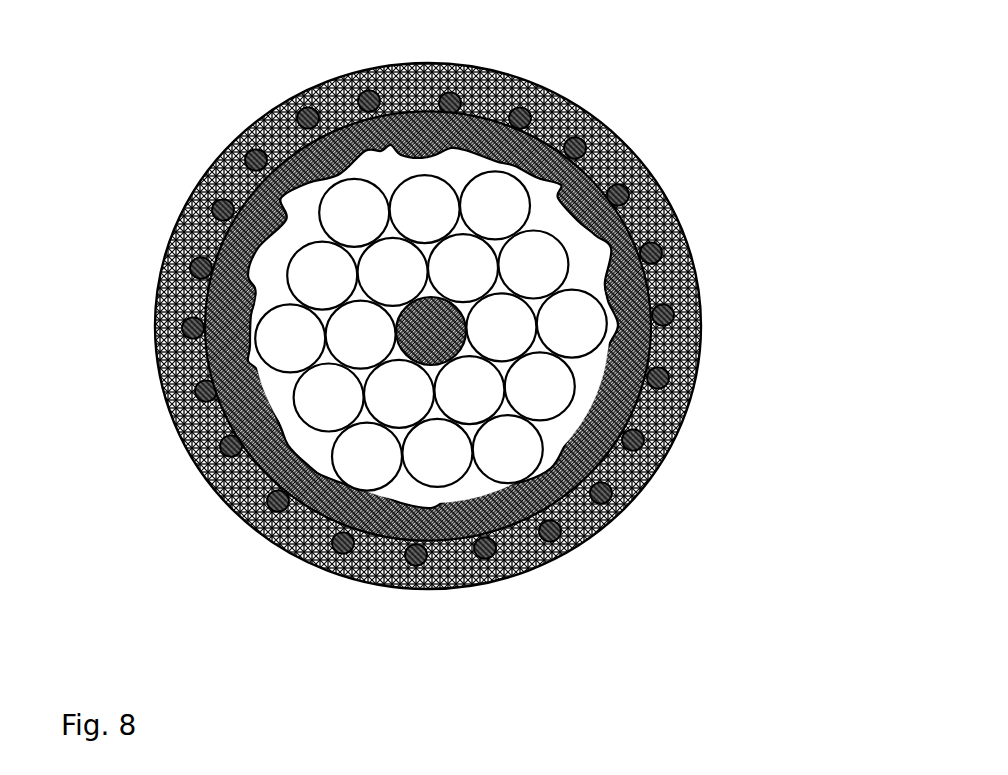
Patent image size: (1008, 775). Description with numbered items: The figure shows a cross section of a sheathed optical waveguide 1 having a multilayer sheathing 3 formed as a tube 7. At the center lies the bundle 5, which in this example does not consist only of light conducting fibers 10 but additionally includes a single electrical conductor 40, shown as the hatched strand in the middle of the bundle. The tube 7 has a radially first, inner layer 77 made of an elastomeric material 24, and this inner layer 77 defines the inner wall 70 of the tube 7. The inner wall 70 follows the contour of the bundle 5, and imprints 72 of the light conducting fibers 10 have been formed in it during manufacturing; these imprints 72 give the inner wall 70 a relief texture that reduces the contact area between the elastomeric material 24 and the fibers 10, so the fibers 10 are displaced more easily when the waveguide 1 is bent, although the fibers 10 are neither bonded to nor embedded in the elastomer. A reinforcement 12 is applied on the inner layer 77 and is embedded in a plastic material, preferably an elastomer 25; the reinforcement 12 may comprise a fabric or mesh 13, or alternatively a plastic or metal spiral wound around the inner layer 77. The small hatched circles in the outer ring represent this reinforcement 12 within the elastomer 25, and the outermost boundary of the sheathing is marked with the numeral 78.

The sheathed optical waveguide 1 is at (427, 363).
The sheathing 3 is at (383, 312).
The tube 7 is at (227, 190).
The bundle 5 is at (282, 383).
The light conducting fibers 10 is at (280, 337).
The reinforcement 12 is at (428, 362).
The fabric or mesh 13 is at (570, 543).
The elastomeric material 24 is at (390, 337).
The inner layer 77 is at (235, 510).
The elastomer 25 is at (628, 462).
The electrical conductor 40 is at (455, 292).
The inner wall 70 is at (333, 171).
The imprints 72 is at (418, 497).
The outer surface 78 is at (285, 540).